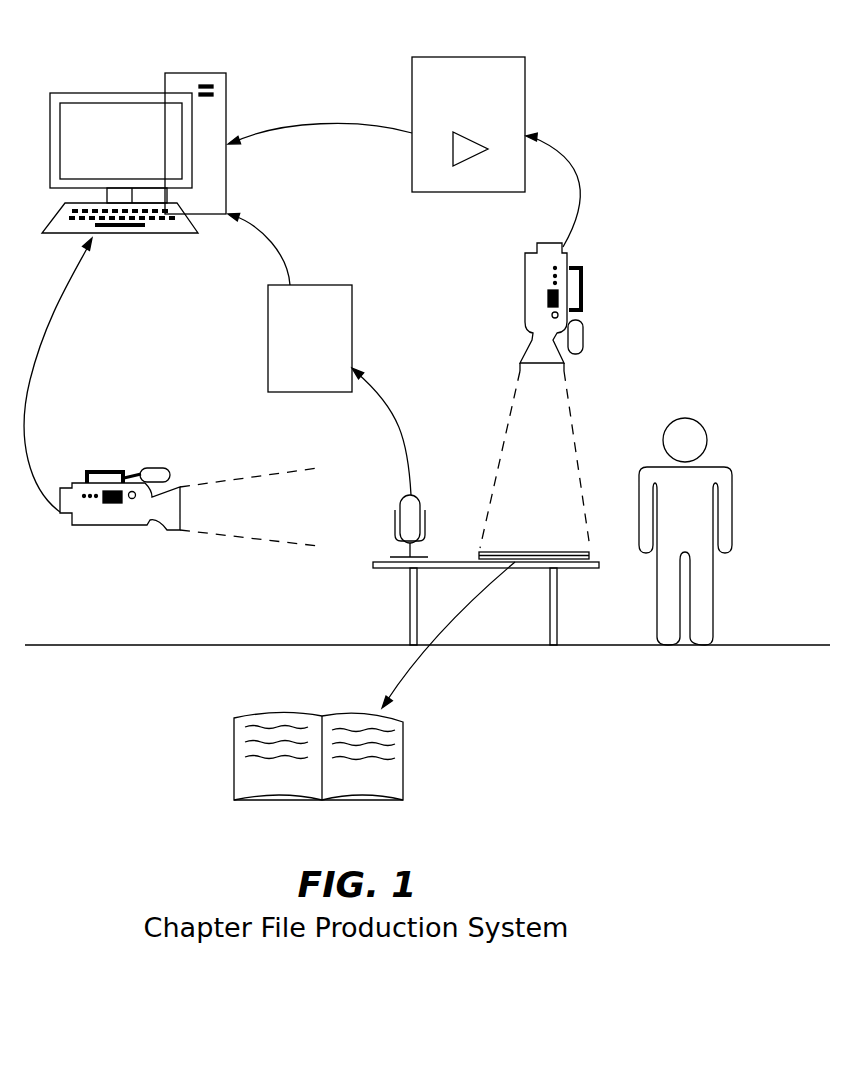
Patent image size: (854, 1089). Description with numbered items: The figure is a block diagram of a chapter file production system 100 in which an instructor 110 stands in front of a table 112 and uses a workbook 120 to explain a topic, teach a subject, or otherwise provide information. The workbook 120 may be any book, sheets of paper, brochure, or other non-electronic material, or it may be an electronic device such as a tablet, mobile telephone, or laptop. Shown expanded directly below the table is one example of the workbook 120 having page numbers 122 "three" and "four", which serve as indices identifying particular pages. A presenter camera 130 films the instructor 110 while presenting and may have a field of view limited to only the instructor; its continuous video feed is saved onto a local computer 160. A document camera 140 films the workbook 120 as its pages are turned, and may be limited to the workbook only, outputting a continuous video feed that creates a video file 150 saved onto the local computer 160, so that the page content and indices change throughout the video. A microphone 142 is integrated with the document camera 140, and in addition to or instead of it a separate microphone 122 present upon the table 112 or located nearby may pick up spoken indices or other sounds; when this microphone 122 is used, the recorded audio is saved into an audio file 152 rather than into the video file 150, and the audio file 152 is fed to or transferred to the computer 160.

The chapter file production system 100 is at (630, 745).
The instructor 110 is at (733, 507).
The table 112 is at (390, 568).
The workbook 120 is at (503, 552).
The page numbers 122 is at (421, 513).
The presenter camera 130 is at (135, 526).
The document camera 140 is at (527, 297).
The microphone 142 is at (584, 338).
The video file 150 is at (474, 57).
The audio file 152 is at (352, 326).
The local computer 160 is at (198, 73).